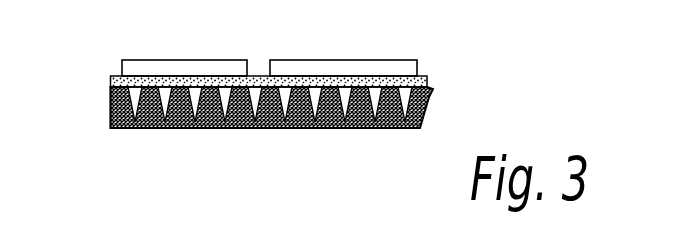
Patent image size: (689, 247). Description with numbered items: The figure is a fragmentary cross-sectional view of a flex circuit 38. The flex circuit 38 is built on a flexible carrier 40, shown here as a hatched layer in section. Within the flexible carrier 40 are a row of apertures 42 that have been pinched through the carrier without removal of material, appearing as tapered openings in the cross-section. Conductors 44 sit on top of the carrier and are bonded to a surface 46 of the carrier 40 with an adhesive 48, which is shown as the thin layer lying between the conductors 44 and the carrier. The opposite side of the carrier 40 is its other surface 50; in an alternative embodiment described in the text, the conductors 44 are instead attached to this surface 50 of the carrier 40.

The flex circuit 38 is at (445, 57).
The flexible carrier 40 is at (432, 91).
The apertures 42 is at (190, 129).
The conductors 44 is at (205, 60).
The surface 46 is at (110, 105).
The adhesive 48 is at (110, 80).
The surface 50 is at (117, 129).